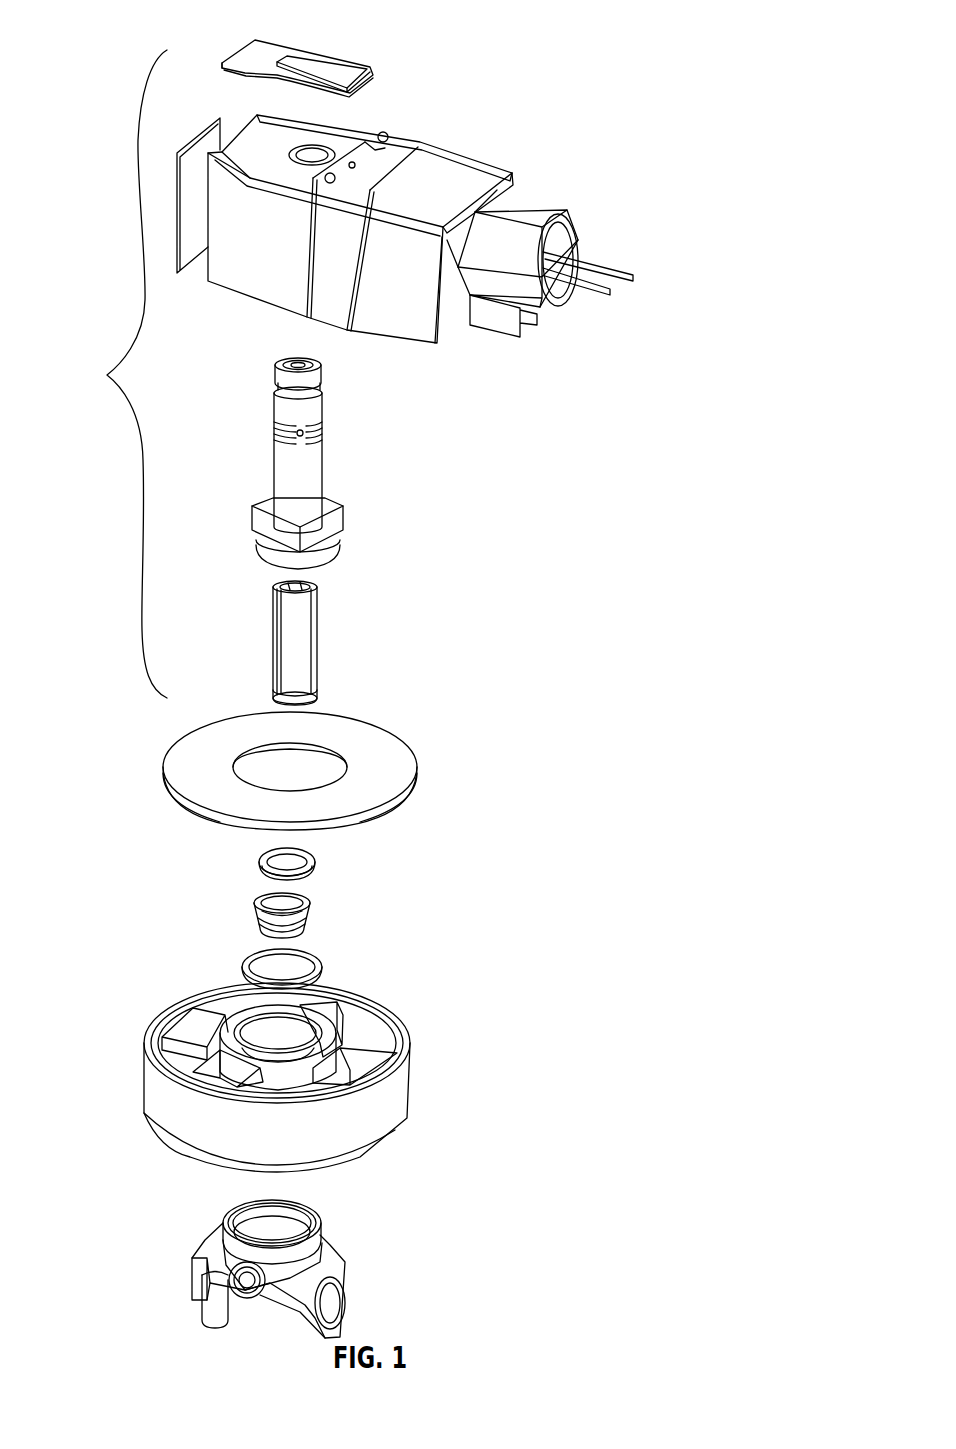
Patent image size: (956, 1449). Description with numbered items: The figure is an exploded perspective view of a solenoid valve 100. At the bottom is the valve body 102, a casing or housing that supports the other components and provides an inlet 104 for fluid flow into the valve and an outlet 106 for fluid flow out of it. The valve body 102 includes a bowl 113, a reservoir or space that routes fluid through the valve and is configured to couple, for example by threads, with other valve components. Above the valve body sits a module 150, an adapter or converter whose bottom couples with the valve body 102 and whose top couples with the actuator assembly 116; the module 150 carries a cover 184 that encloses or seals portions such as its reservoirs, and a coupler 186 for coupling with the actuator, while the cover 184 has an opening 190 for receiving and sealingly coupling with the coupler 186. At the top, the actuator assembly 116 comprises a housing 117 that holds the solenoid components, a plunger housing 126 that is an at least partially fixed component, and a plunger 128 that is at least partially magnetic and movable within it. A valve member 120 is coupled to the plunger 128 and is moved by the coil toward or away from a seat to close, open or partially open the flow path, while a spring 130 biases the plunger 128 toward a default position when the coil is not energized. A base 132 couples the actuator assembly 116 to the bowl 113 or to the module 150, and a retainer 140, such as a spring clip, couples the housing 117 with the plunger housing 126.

The solenoid valve 100 is at (607, 73).
The valve body 102 is at (340, 1268).
The inlet 104 is at (190, 1277).
The outlet 106 is at (332, 1303).
The bowl 113 is at (313, 1217).
The actuator assembly 116 is at (115, 374).
The housing 117 is at (443, 167).
The valve member 120 is at (312, 700).
The plunger housing 126 is at (308, 458).
The plunger 128 is at (318, 627).
The spring 130 is at (310, 908).
The base 132 is at (340, 527).
The retainer 140 is at (272, 58).
The module 150 is at (407, 1047).
The cover 184 is at (417, 778).
The coupler 186 is at (252, 1040).
The opening 190 is at (270, 770).